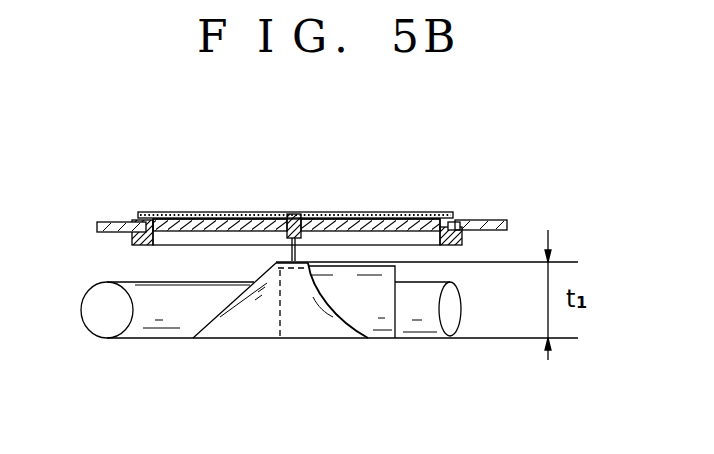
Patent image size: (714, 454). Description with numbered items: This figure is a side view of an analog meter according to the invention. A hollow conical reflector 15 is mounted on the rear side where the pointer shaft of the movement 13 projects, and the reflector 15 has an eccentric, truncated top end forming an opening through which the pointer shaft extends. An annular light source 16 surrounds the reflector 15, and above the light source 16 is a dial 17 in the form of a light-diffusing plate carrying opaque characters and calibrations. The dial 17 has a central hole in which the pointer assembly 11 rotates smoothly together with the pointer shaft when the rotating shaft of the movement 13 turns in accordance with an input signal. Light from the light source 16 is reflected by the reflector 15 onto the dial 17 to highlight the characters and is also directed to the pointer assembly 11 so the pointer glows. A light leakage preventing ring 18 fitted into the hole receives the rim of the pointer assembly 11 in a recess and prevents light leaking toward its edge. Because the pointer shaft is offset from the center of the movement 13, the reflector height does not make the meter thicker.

The pointer assembly 11 is at (171, 212).
The movement 13 is at (395, 316).
The hollow conical reflector 15 is at (338, 327).
The annular light source 16 is at (455, 318).
The dial 17 is at (493, 219).
The light leakage preventing ring 18 is at (131, 246).